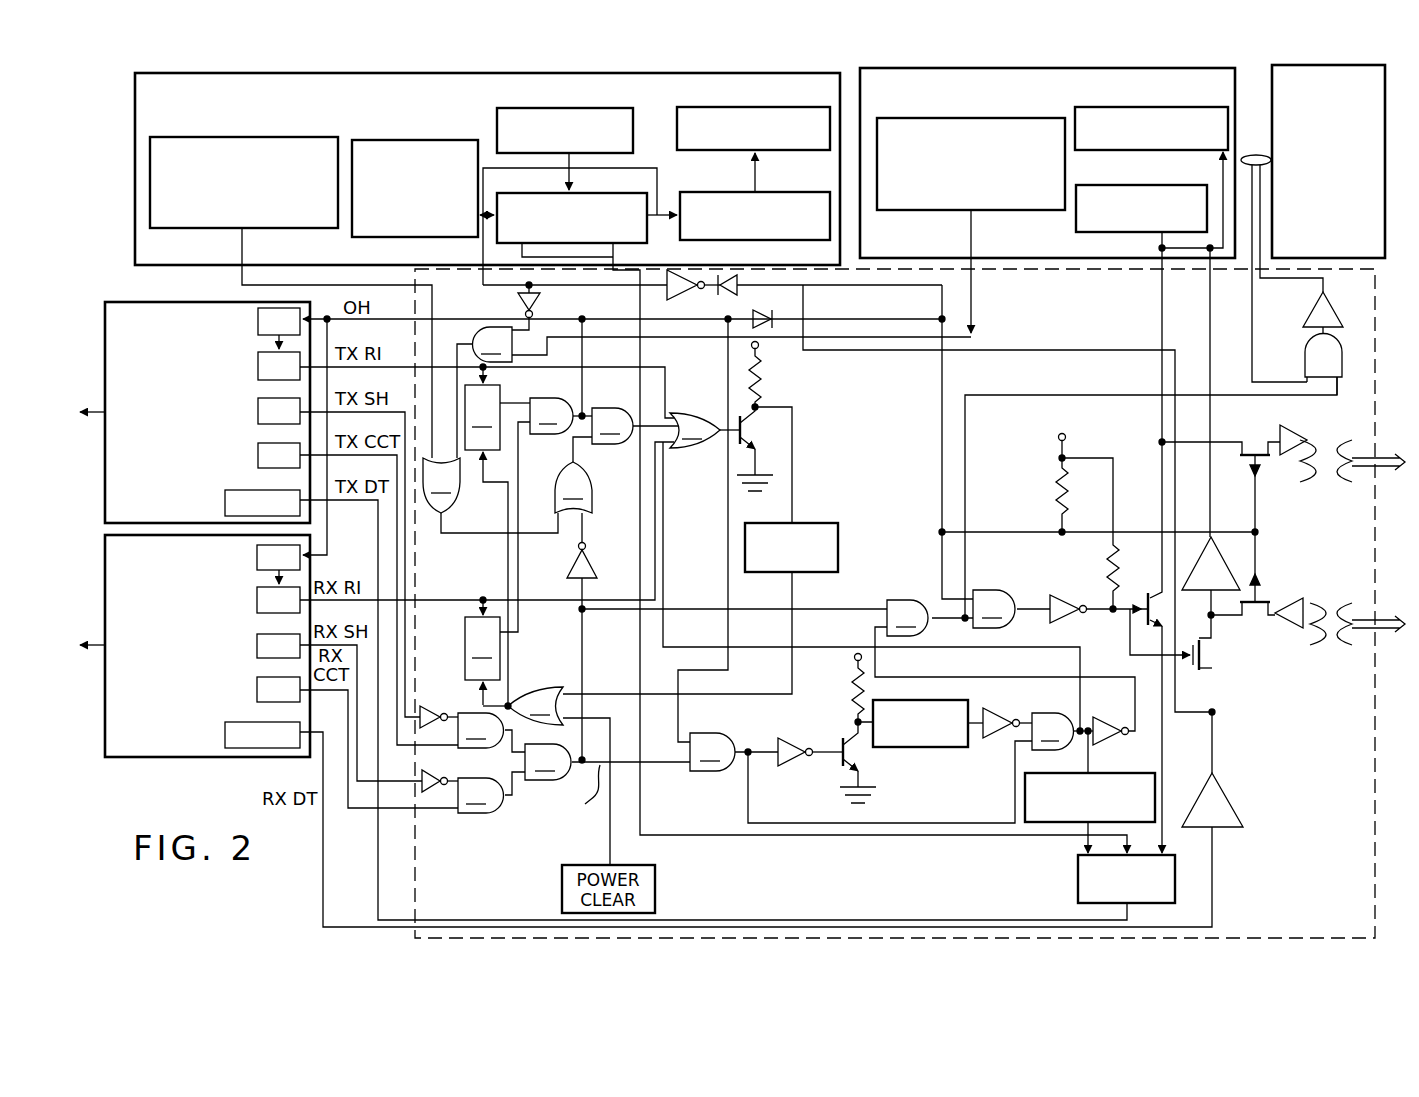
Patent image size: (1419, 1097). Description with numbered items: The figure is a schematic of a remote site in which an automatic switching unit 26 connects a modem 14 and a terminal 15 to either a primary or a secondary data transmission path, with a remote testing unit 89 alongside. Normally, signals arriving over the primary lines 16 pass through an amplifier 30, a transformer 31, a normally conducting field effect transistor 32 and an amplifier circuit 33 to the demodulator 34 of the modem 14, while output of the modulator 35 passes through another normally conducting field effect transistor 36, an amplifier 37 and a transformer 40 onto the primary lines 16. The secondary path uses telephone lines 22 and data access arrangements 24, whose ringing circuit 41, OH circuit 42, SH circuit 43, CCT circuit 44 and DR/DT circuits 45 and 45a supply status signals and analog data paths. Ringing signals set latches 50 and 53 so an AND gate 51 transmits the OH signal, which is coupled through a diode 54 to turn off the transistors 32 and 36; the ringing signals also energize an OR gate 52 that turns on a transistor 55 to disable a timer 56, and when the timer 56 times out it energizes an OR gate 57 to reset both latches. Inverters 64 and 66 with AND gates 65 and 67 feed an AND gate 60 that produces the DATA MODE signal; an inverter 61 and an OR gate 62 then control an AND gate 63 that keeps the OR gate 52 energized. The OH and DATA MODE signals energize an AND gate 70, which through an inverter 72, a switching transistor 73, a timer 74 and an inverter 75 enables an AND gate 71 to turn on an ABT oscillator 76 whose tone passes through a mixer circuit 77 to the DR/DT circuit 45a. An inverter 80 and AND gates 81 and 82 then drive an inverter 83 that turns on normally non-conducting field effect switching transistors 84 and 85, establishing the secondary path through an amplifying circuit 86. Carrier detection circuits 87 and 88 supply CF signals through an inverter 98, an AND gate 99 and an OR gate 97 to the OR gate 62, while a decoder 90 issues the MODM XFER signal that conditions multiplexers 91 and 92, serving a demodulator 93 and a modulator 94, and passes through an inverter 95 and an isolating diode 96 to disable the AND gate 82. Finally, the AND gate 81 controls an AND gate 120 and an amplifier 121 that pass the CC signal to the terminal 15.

The modem 14 is at (1047, 163).
The terminal 15 is at (1320, 190).
The transmission lines 16 is at (1380, 470).
The telephone lines and related circuits 22 is at (100, 745).
The data access arrangement 24 is at (218, 532).
The automatic switching unit 26 is at (1283, 806).
The amplifier 30 is at (1285, 598).
The transformer 31 is at (1340, 603).
The field effect transistor 32 is at (1258, 598).
The amplifier circuit 33 is at (1200, 560).
The demodulator circuit 34 is at (1150, 107).
The modulator 35 is at (1145, 185).
The field effect transistor 36 is at (1250, 440).
The amplifier 37 is at (1300, 425).
The transformer 40 is at (1340, 445).
The ringing circuit 41 is at (290, 587).
The OH circuit 42 is at (334, 560).
The SH circuit 43 is at (257, 645).
The CCT circuit 44 is at (257, 688).
The DR/DT circuit 45 is at (225, 740).
The DR/DT circuit 45a is at (225, 503).
The latch 50 is at (497, 563).
The AND gate 51 is at (561, 416).
The OR gate 52 is at (695, 430).
The latch 53 is at (497, 417).
The diode 54 is at (760, 308).
The transistor 55 is at (745, 435).
The timer 56 is at (797, 523).
The OR gate 57 is at (637, 658).
The AND gate 60 is at (607, 788).
The inverter 61 is at (590, 560).
The OR gate 62 is at (573, 475).
The AND gate 63 is at (635, 426).
The inverter 64 is at (430, 706).
The AND gate 65 is at (491, 732).
The inverter 66 is at (432, 792).
The AND gate 67 is at (491, 792).
The AND gate 70 is at (855, 571).
The AND gate 71 is at (1062, 731).
The inverter 72 is at (792, 738).
The switching transistor 73 is at (855, 760).
The timer 74 is at (935, 700).
The inverter 75 is at (998, 738).
The ABT oscillator 76 is at (1057, 822).
The mixer circuit 77 is at (1078, 880).
The inverter 80 is at (1105, 722).
The AND gate 81 is at (777, 618).
The AND gate 82 is at (1011, 609).
The inverter 83 is at (1068, 595).
The field effect switching transistor 84 is at (1118, 575).
The field effect switching transistor 85 is at (1210, 665).
The amplifying circuit 86 is at (1243, 812).
The carrier detection circuit 87 is at (1020, 118).
The carrier detection circuit 88 is at (282, 228).
The remote testing unit 89 is at (487, 179).
The decoder 90 is at (385, 237).
The multiplexer 91 is at (647, 210).
The multiplexer 92 is at (790, 192).
The demodulator 93 is at (720, 153).
The modulator 94 is at (633, 122).
The inverter 95 is at (683, 300).
The isolating diode 96 is at (735, 295).
The OR gate 97 is at (490, 495).
The inverter 98 is at (540, 300).
The AND gate 99 is at (714, 392).
The AND gate 120 is at (1311, 374).
The amplifier 121 is at (1340, 300).